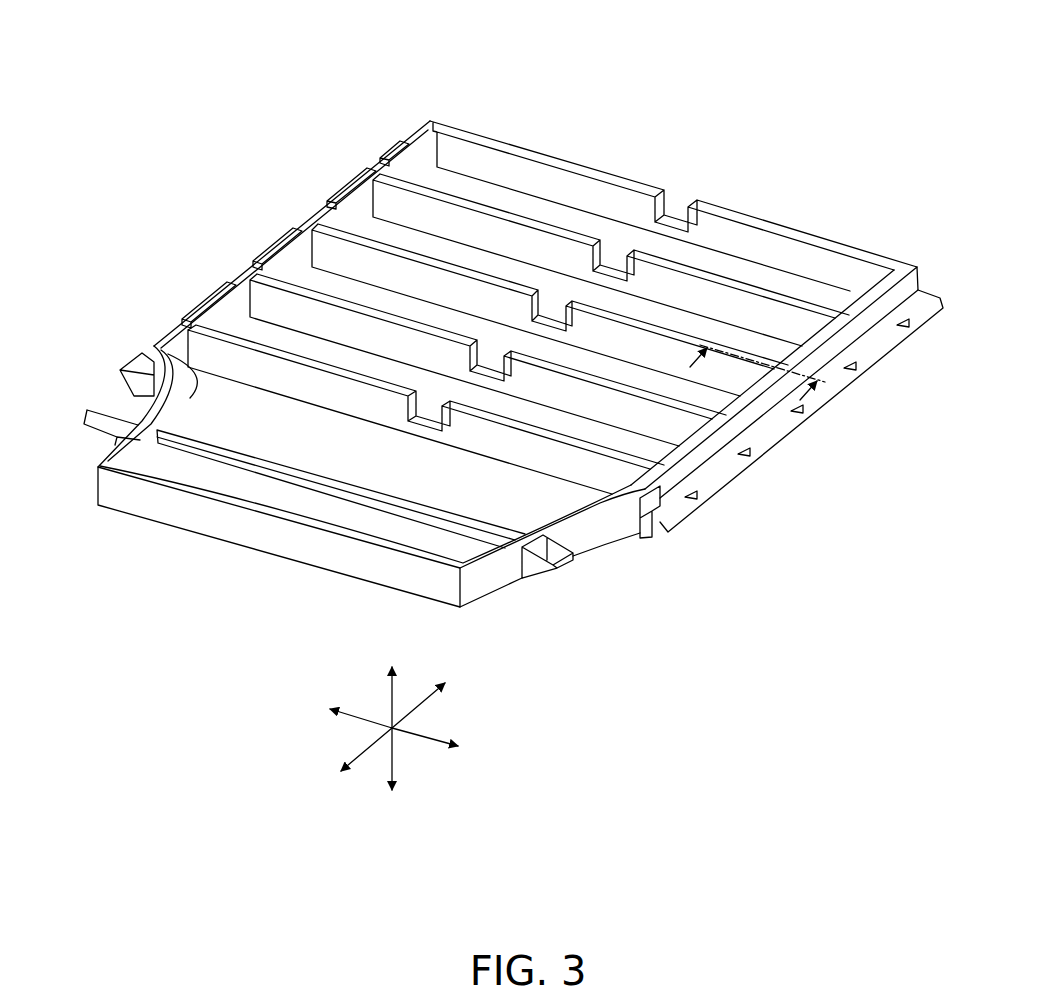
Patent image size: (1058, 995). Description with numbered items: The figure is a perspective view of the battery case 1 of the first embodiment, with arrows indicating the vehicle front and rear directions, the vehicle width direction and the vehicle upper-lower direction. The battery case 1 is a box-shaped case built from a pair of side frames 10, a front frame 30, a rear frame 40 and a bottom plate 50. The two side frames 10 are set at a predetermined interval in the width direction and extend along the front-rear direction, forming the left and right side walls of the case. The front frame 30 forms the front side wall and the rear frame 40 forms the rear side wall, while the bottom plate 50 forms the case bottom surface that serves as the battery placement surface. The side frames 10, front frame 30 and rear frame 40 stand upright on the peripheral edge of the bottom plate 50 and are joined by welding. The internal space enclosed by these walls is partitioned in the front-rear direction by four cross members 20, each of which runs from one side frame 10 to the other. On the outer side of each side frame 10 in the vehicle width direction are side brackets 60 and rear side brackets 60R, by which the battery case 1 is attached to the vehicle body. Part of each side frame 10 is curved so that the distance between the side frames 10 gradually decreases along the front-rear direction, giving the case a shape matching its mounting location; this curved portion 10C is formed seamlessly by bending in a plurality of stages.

The battery case 1 is at (675, 98).
The side frame 10 is at (300, 255).
The curved portion 10C is at (187, 377).
The cross member 20 is at (353, 260).
The front frame 30 is at (462, 157).
The rear frame 40 is at (147, 510).
The bottom plate 50 is at (297, 512).
The side bracket 60 is at (190, 292).
The rear side bracket 60R is at (100, 400).